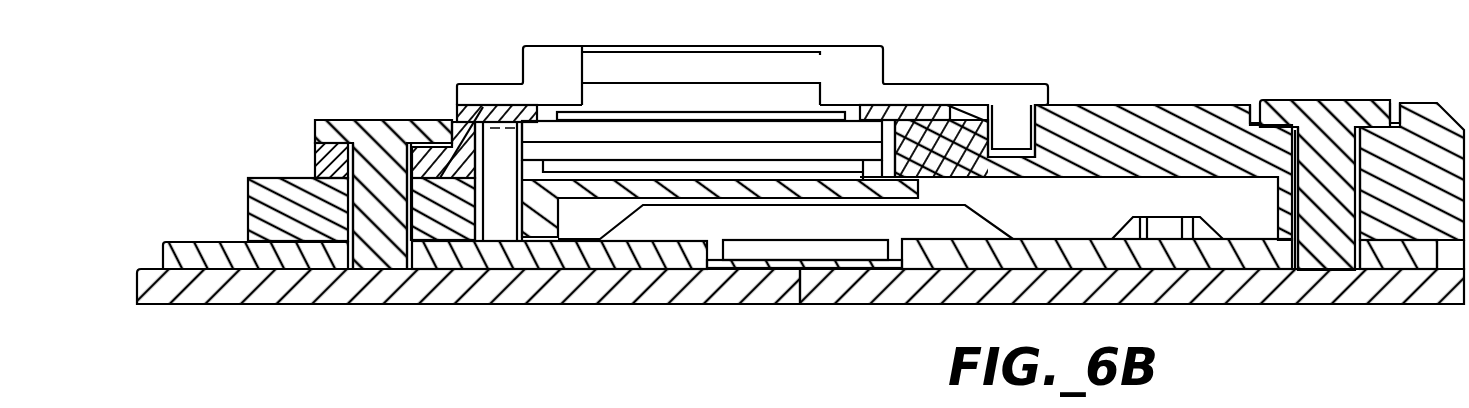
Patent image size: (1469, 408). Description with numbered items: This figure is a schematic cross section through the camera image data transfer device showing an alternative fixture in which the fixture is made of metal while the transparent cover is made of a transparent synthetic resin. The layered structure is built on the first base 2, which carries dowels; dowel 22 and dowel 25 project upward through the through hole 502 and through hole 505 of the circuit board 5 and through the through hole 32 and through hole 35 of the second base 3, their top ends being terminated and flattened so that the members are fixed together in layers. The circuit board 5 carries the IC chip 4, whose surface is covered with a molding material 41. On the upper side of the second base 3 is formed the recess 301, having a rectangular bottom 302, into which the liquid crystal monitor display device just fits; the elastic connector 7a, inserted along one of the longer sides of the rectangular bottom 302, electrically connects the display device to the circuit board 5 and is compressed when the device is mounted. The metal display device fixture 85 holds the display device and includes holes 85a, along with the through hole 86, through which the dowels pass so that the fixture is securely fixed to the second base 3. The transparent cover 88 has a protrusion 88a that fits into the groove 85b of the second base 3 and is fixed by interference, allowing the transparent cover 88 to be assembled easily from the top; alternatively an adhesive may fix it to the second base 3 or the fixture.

The first base 2 is at (598, 295).
The second base 3 is at (1183, 132).
The IC chip 4 is at (850, 258).
The circuit board 5 is at (1020, 256).
The connector 7a is at (500, 222).
The dowel 22 is at (386, 125).
The dowel 25 is at (1320, 123).
The through hole 32 is at (388, 215).
The through hole 35 is at (1310, 200).
The molding material 41 is at (727, 220).
The display device fixture 85 is at (495, 112).
The holes 85a is at (358, 148).
The groove 85b is at (1040, 150).
The through hole 86 is at (558, 73).
The transparent cover 88 is at (631, 67).
The protrusion 88a is at (1008, 113).
The recess 301 is at (893, 160).
The rectangular bottom 302 is at (743, 195).
The through hole 502 is at (365, 225).
The through hole 505 is at (1302, 205).